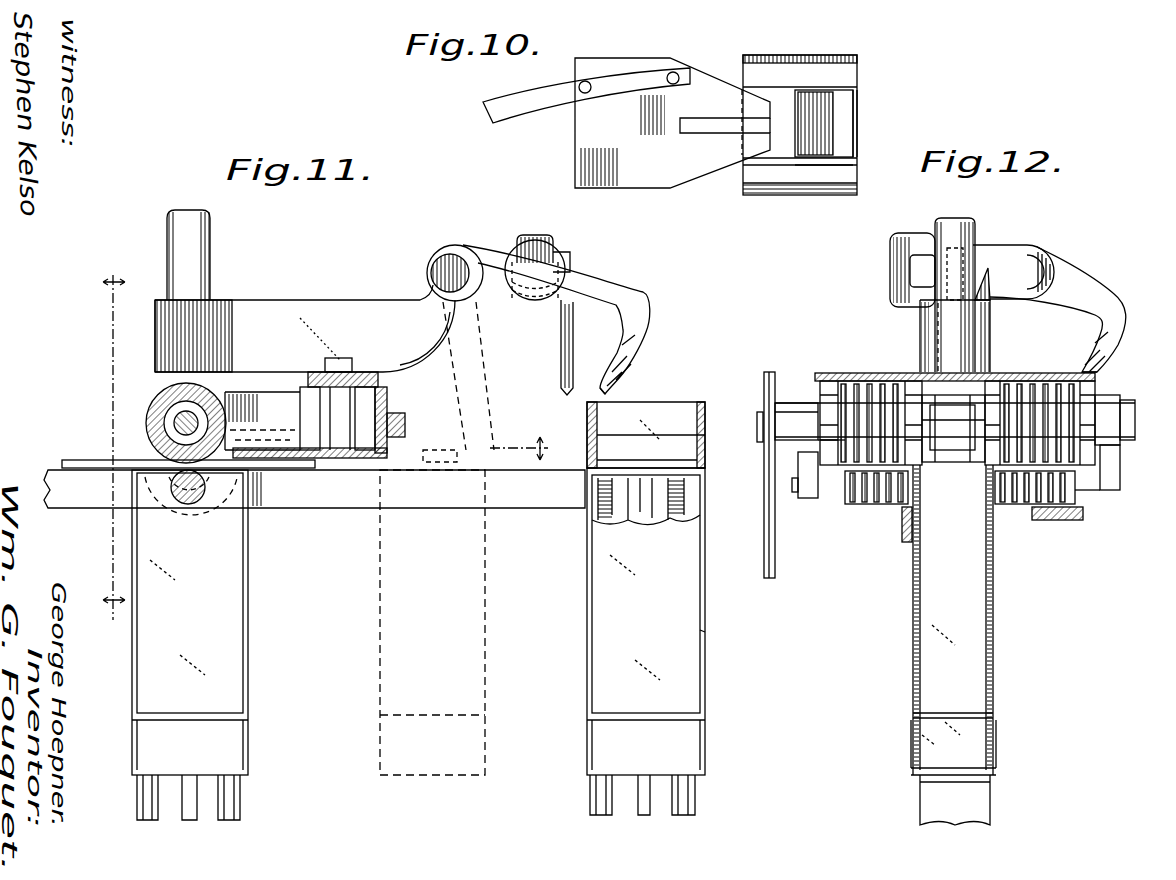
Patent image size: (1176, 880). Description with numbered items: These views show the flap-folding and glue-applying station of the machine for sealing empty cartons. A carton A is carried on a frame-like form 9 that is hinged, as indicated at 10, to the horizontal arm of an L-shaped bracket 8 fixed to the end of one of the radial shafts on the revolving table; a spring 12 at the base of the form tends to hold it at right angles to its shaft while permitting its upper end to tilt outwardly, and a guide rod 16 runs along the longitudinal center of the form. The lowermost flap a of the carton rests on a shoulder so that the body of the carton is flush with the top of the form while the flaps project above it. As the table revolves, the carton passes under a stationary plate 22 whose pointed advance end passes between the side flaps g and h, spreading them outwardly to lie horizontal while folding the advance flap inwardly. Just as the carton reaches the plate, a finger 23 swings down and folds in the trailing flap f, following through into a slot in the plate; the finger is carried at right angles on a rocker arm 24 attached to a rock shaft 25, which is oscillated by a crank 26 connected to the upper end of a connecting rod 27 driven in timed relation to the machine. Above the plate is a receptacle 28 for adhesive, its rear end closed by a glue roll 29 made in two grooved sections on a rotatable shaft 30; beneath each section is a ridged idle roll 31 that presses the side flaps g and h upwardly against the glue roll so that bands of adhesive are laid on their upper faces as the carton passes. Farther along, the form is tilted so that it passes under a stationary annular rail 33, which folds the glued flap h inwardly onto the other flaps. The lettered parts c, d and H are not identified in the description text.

In FIG. 10, the L-shaped bracket 8 is at (837, 72).
In FIG. 11, the frame-like part 9 is at (230, 800).
In FIG. 12, the frame-like part 9 is at (987, 800).
In FIG. 11, the hinge 10 is at (531, 448).
In FIG. 11, the spring 12 is at (111, 447).
In FIG. 11, the guide rod 16 is at (196, 794).
In FIG. 10, the stationary plate 22 is at (665, 182).
In FIG. 11, the stationary plate 22 is at (402, 460).
In FIG. 11, the finger 23 is at (640, 325).
In FIG. 12, the finger 23 is at (1118, 340).
In FIG. 10, the slot 24 is at (706, 128).
In FIG. 11, the slot 24 is at (612, 290).
In FIG. 12, the slot 24 is at (1093, 284).
In FIG. 11, the rock shaft 25 is at (520, 243).
In FIG. 12, the rock shaft 25 is at (905, 287).
In FIG. 11, the crank 26 is at (553, 255).
In FIG. 12, the crank 26 is at (892, 258).
In FIG. 11, the connecting rod 27 is at (561, 367).
In FIG. 11, the receptacle 28 is at (265, 400).
In FIG. 11, the glue roll 29 is at (150, 400).
In FIG. 12, the glue roll 29 is at (867, 372).
In FIG. 12, the rotatable shaft 30 is at (958, 470).
In FIG. 11, the idle roll 31 is at (188, 504).
In FIG. 12, the idle roll 31 is at (845, 500).
In FIG. 11, the stationary annular rail 33 is at (455, 498).
In FIG. 12, the stationary annular rail 33 is at (905, 535).
In FIG. 11, the carton A is at (240, 607).
In FIG. 11, the hidden leg H is at (487, 613).
In FIG. 12, the hidden leg H is at (995, 573).
In FIG. 12, the lowermost flap a is at (940, 739).
In FIG. 10, the wall c is at (787, 147).
In FIG. 11, the wall c is at (598, 436).
In FIG. 12, the wall c is at (995, 757).
In FIG. 11, the lower compartment d is at (418, 745).
In FIG. 12, the lower compartment d is at (911, 757).
In FIG. 10, the trailing flap f is at (858, 118).
In FIG. 11, the trailing flap f is at (707, 415).
In FIG. 11, the side flap g is at (650, 405).
In FIG. 12, the side flap g is at (1005, 510).
In FIG. 10, the side flap h is at (818, 182).
In FIG. 12, the side flap h is at (836, 485).